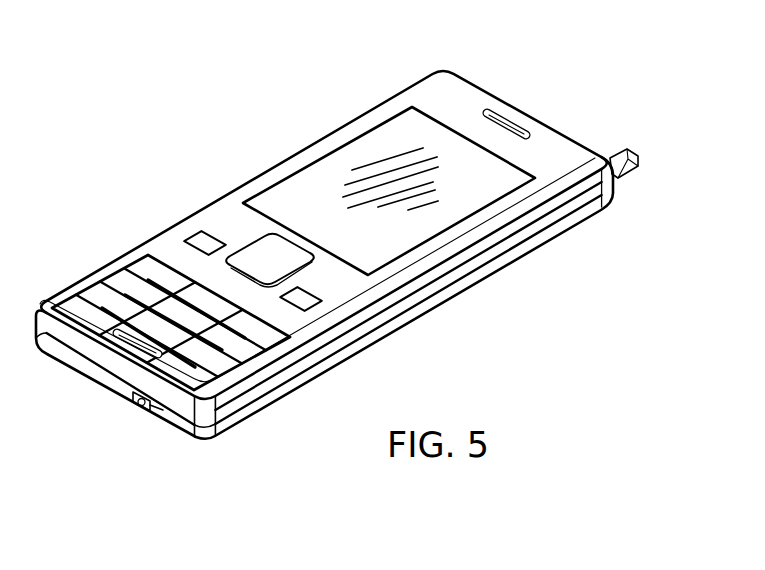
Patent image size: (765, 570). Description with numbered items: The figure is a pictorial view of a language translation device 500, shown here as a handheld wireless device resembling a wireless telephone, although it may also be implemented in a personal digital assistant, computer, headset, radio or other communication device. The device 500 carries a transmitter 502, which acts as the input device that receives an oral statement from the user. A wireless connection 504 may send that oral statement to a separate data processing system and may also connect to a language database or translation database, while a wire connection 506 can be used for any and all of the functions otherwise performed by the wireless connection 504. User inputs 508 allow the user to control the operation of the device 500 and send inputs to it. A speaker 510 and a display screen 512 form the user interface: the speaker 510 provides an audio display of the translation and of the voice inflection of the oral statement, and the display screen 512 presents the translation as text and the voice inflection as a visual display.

The language translation device 500 is at (194, 60).
The transmitter 502 is at (108, 352).
The wireless connection 504 is at (631, 153).
The wire connection 506 is at (161, 412).
The user inputs 508 is at (197, 236).
The speaker 510 is at (511, 122).
The display screen 512 is at (307, 182).